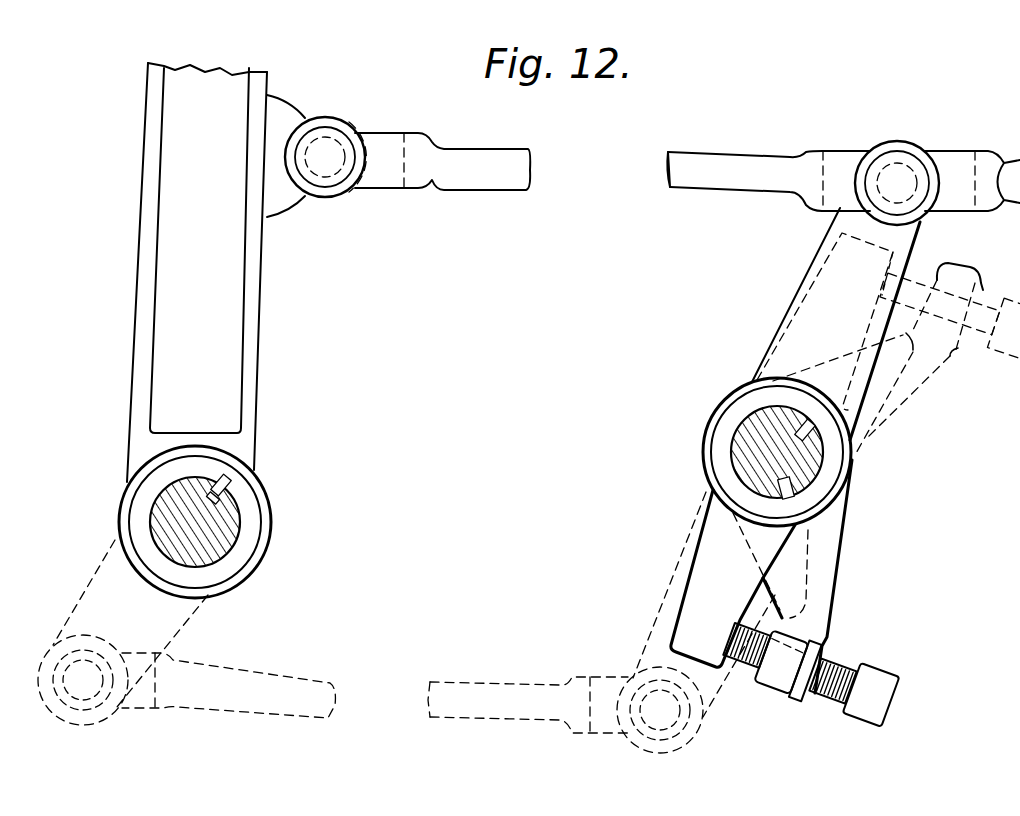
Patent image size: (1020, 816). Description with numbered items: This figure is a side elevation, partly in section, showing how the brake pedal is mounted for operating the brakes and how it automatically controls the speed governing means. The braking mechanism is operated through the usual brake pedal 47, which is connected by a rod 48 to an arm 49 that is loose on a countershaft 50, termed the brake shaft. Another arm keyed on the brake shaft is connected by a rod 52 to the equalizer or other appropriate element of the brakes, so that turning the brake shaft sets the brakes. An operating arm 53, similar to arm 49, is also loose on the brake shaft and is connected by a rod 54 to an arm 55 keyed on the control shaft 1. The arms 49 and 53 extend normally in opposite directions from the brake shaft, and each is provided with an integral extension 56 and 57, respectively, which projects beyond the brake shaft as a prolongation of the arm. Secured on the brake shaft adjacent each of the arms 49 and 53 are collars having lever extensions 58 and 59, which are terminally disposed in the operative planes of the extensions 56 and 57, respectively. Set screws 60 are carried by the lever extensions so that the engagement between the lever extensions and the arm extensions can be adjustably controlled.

The brake pedal 47 is at (264, 323).
The control shaft 1 is at (225, 520).
The rod 48 is at (523, 195).
The rod 52 is at (1006, 189).
The arm 49 is at (828, 237).
The integral extension 57 is at (818, 281).
The countershaft (brake shaft) 50 is at (805, 461).
The lever extension 59 is at (919, 353).
The lever extension 58 is at (828, 557).
The set screw 60 is at (872, 672).
The operating arm 53 is at (684, 540).
The integral extension 56 is at (687, 591).
The arm 55 is at (180, 619).
The rod 54 is at (275, 662).